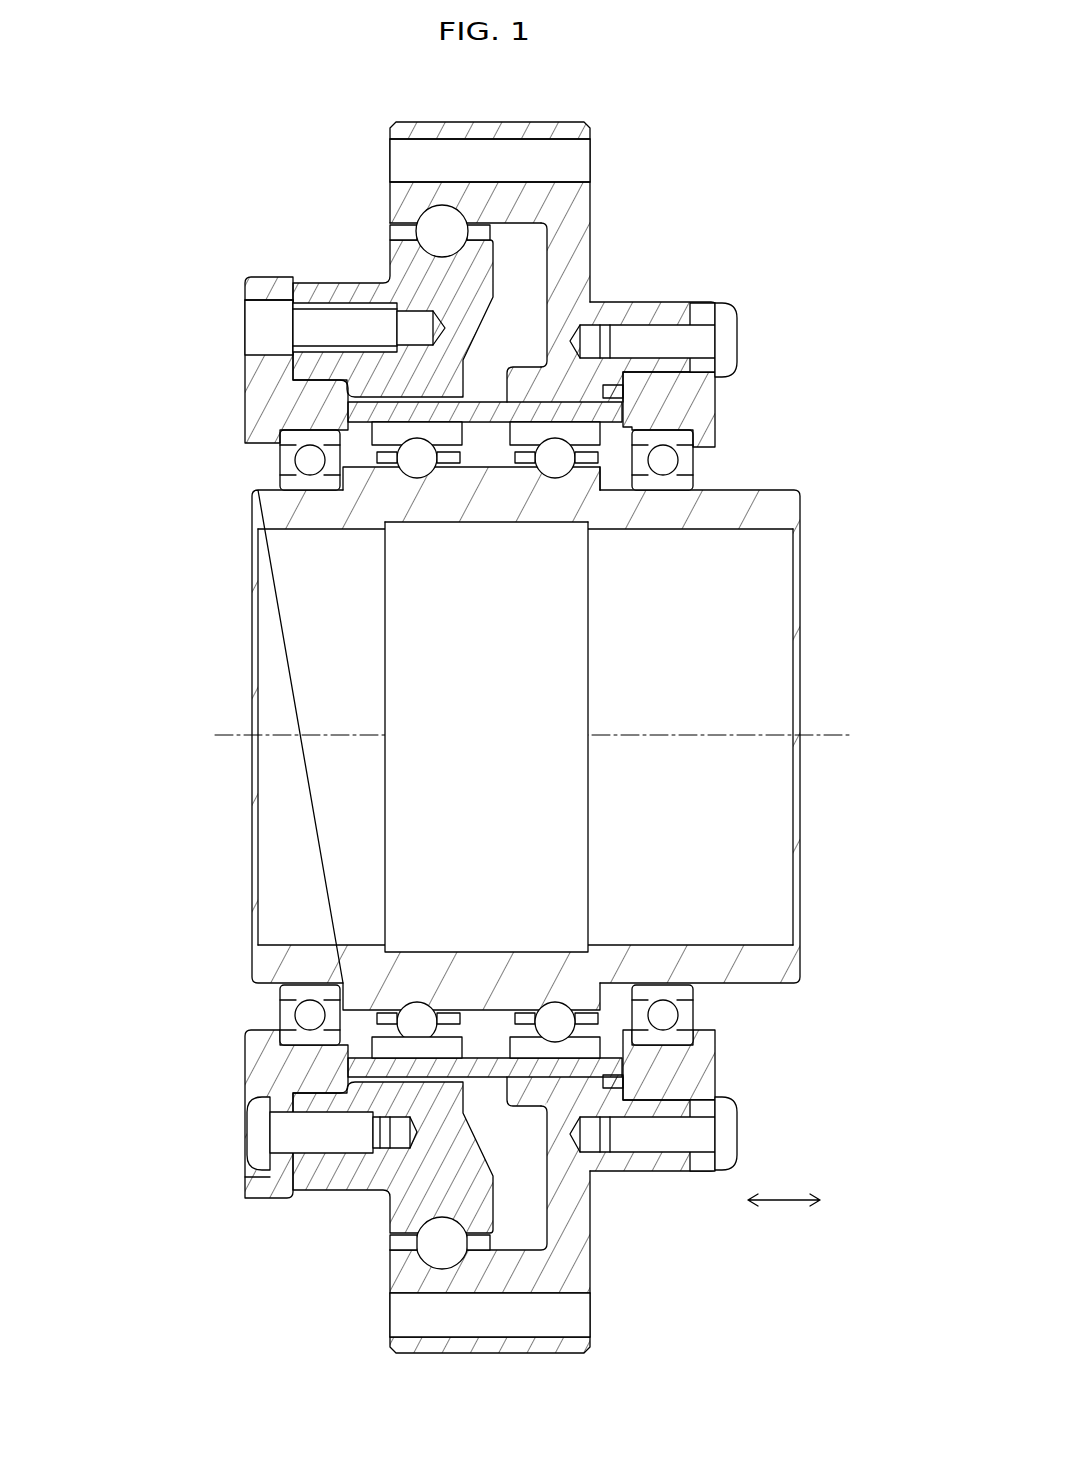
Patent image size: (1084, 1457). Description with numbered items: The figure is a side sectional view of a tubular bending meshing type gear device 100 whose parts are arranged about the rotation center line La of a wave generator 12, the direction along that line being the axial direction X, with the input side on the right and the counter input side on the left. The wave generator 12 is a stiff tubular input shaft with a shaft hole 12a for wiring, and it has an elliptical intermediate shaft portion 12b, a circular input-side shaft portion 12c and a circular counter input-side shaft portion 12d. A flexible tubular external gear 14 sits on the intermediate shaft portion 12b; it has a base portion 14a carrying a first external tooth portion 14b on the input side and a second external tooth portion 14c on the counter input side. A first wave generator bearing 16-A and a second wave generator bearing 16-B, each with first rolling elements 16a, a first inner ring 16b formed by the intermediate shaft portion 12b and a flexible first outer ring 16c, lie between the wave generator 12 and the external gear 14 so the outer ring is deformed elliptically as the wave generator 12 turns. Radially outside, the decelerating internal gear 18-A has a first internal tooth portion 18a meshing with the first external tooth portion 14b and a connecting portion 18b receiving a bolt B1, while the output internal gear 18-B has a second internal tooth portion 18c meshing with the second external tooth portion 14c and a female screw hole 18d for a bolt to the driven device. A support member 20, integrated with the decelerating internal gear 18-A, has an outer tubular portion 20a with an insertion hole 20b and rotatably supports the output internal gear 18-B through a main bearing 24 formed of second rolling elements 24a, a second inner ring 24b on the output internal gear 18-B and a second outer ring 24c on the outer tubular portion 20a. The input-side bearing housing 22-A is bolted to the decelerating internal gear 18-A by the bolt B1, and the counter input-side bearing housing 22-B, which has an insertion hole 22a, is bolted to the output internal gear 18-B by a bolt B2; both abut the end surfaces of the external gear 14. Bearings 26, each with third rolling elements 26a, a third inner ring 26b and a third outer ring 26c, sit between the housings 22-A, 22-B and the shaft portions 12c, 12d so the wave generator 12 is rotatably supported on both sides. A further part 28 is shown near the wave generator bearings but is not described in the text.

The gear device 100 is at (492, 712).
The wave generator 12 is at (536, 708).
The shaft hole 12a is at (730, 522).
The intermediate shaft portion 12b is at (532, 470).
The input-side shaft portion 12c is at (663, 522).
The counter input-side shaft portion 12d is at (310, 524).
The external gear 14 is at (486, 691).
The base portion 14a is at (453, 505).
The first external tooth portion 14b is at (578, 442).
The second external tooth portion 14c is at (354, 447).
The first wave generator bearing 16-A is at (571, 980).
The second wave generator bearing 16-B is at (411, 968).
The first rolling elements 16a is at (460, 1036).
The first inner ring 16b is at (390, 1040).
The first outer ring 16c is at (548, 1004).
The decelerating internal gear 18-A is at (609, 290).
The output internal gear 18-B is at (393, 291).
The first internal tooth portion 18a is at (527, 366).
The connecting portion 18b is at (657, 310).
The second internal tooth portion 18c is at (478, 400).
The female screw hole 18d is at (327, 320).
The support member 20 is at (490, 186).
The outer tubular portion 20a is at (433, 132).
The insertion hole 20b is at (477, 137).
The input-side bearing housing 22-A is at (733, 398).
The counter input-side bearing housing 22-B is at (241, 329).
The insertion hole 22a is at (256, 304).
The main bearing 24 is at (505, 1215).
The second rolling elements 24a is at (480, 1195).
The second inner ring 24b is at (397, 1242).
The second outer ring 24c is at (448, 1262).
The bearing 26 is at (479, 958).
The third rolling elements 26a is at (310, 1008).
The third inner ring 26b is at (300, 1040).
The third outer ring 26c is at (290, 1040).
The spacer 28 is at (608, 470).
The bolt B1 is at (727, 323).
The bolt B2 is at (257, 1140).
The rotation center line La is at (804, 735).
The axial direction X is at (784, 1227).